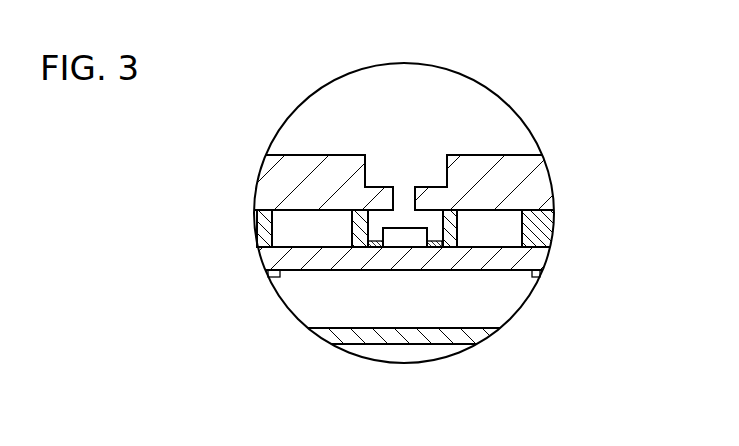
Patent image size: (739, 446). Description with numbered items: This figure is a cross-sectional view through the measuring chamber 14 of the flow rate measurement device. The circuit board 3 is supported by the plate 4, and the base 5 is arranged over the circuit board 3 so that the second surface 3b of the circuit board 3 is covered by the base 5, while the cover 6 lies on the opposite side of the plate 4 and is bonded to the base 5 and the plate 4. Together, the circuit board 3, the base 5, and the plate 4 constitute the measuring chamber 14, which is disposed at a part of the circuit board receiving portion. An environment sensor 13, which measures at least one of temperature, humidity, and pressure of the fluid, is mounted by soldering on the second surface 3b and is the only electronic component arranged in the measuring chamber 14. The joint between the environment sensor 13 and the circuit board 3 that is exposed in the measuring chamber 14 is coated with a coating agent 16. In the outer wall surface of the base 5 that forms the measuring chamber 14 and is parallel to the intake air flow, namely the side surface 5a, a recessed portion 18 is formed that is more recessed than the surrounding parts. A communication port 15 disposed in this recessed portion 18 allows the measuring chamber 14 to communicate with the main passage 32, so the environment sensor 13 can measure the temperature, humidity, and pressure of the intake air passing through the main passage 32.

The circuit board 3 is at (480, 258).
The second surface 3b is at (297, 247).
The plate 4 is at (458, 225).
The base 5 is at (500, 175).
The side surface 5a is at (518, 156).
The cover 6 is at (437, 346).
The environment sensor 13 is at (400, 236).
The measuring chamber 14 is at (373, 227).
The communication port 15 is at (403, 193).
The coating agent 16 is at (374, 244).
The recessed portion 18 is at (435, 187).
The main passage 32 is at (327, 103).